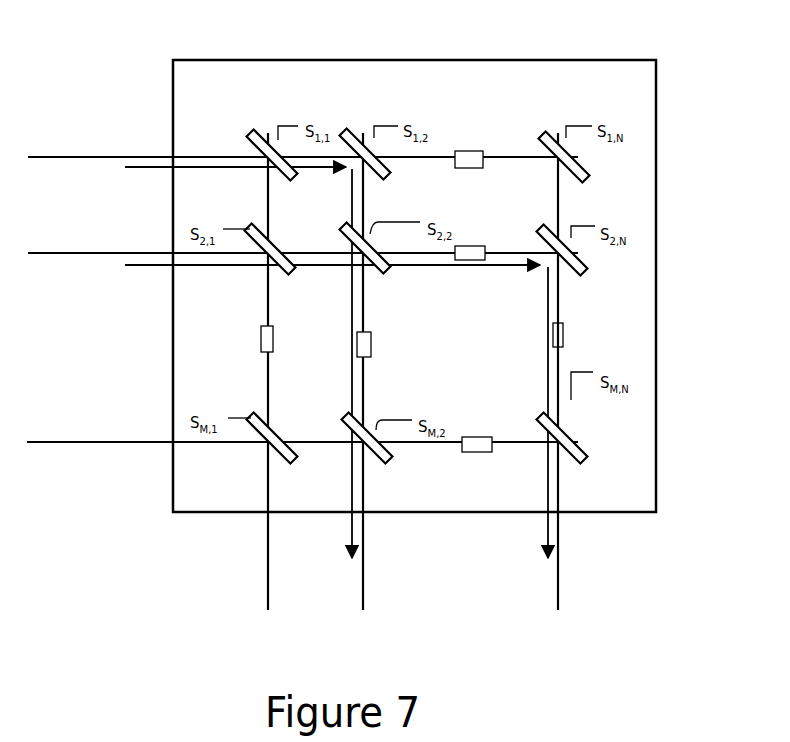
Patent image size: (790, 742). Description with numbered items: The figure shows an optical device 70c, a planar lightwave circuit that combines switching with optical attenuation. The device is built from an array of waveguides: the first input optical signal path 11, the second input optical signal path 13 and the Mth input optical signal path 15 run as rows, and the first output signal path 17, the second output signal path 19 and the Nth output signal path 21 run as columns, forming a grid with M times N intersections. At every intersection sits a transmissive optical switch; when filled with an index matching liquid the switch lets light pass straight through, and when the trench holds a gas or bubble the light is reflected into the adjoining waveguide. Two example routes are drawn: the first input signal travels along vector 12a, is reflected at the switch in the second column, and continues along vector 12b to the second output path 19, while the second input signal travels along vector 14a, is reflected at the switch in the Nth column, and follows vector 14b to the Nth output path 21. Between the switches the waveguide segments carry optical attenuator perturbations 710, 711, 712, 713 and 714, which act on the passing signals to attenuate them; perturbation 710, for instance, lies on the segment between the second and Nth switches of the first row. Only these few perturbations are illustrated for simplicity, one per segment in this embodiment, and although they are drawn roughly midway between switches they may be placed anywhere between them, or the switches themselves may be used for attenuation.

The optical switch matrix 70c is at (560, 60).
The Input-1 optical signal path 11 is at (101, 157).
The Input-2 optical signal path 13 is at (101, 253).
The Input-M optical signal path 15 is at (100, 442).
The first path vector 12a is at (243, 167).
The second path vector 14a is at (243, 265).
The first path vector 12b is at (355, 347).
The second path vector 14b is at (548, 350).
The Output-1 optical signal path 17 is at (268, 536).
The Output-2 optical signal path 19 is at (363, 538).
The Output-N optical signal path 21 is at (558, 538).
The optical attenuator perturbation 710 is at (486, 147).
The optical attenuator perturbation 711 is at (512, 198).
The optical attenuator perturbation 712 is at (505, 410).
The optical attenuator perturbation 713 is at (282, 333).
The optical attenuator perturbation 714 is at (380, 342).